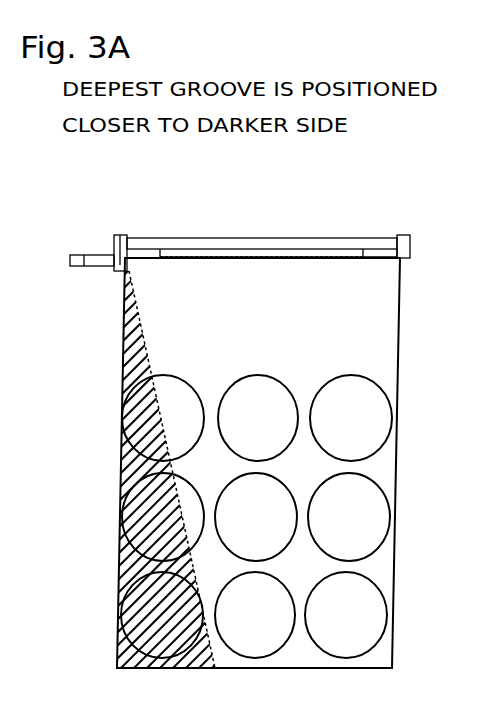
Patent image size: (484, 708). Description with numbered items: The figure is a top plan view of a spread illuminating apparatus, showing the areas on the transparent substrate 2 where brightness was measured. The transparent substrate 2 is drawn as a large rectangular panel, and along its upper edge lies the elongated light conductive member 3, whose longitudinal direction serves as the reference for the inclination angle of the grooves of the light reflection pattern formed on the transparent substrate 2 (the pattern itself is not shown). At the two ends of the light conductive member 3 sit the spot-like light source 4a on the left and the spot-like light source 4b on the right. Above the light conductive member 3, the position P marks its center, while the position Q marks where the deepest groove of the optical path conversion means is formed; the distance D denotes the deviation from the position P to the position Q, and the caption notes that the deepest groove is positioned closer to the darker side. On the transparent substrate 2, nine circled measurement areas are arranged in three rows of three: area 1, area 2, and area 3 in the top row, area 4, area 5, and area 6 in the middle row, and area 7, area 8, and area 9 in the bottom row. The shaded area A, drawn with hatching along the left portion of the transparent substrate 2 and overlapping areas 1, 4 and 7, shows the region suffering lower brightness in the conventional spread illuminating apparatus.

The transparent substrate 2 is at (203, 298).
The light conductive member 3 is at (348, 247).
The spot-like light source 4a is at (125, 235).
The right clamp 4b is at (400, 235).
The shaded area A is at (121, 460).
The position Q is at (215, 236).
The position P is at (264, 223).
The distance D is at (262, 202).
The measurement area 1 is at (163, 418).
The measurement area 4 is at (163, 517).
The measurement area 5 is at (256, 517).
The measurement area 6 is at (349, 517).
The measurement area 7 is at (162, 615).
The measurement area 8 is at (255, 615).
The measurement area 9 is at (346, 615).